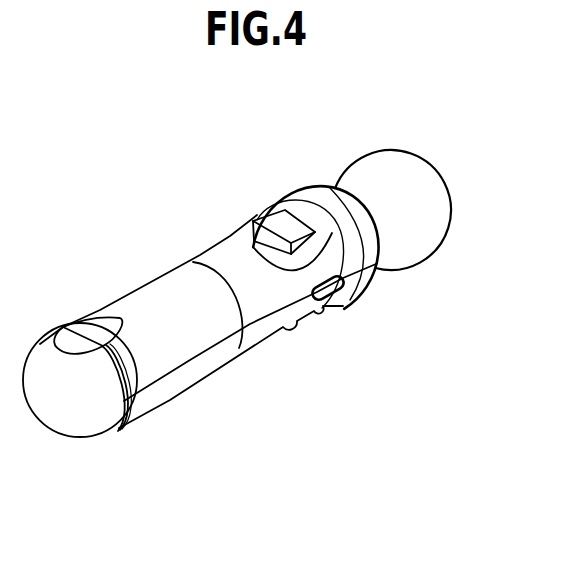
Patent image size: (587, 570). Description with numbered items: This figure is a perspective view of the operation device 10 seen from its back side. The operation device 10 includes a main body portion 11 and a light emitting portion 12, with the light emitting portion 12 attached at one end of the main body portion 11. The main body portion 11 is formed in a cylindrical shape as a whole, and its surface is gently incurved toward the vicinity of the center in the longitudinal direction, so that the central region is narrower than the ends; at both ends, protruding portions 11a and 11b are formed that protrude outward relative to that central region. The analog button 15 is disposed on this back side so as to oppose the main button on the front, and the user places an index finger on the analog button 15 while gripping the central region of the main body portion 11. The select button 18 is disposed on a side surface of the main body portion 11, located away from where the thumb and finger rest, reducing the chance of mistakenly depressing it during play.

The operation device 10 is at (237, 289).
The main body portion 11 is at (230, 335).
The protruding portion 11a is at (375, 283).
The protruding portion 11b is at (121, 432).
The light emitting portion 12 is at (409, 153).
The analog button 15 is at (273, 225).
The select button 18 is at (325, 300).